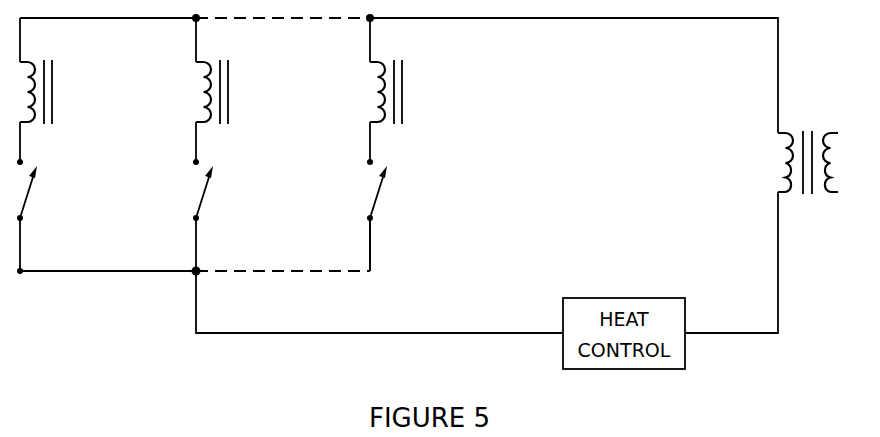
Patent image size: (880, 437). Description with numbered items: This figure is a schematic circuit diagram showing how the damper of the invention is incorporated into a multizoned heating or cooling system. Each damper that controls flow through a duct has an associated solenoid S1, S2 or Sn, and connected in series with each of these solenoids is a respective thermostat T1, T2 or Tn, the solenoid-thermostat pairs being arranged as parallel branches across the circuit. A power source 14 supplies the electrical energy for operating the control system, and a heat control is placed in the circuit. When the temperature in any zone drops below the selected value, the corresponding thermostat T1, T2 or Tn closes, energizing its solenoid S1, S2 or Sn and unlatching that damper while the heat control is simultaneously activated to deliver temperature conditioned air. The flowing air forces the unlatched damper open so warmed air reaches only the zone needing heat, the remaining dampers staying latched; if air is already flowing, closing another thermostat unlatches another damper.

The solenoid S1 is at (53, 92).
The solenoid S2 is at (230, 92).
The solenoid Sn is at (404, 92).
The thermostat T1 is at (41, 196).
The thermostat T2 is at (216, 196).
The thermostat Tn is at (391, 196).
The power source 14 is at (834, 192).